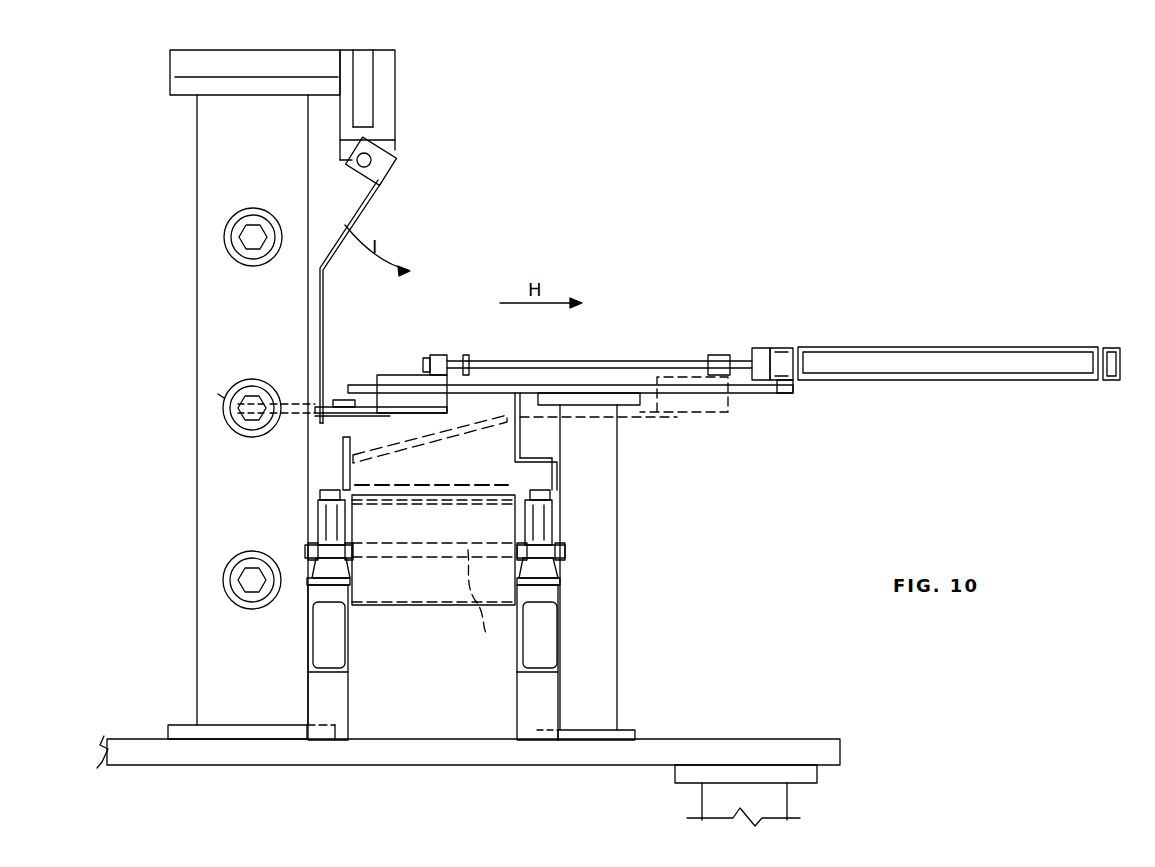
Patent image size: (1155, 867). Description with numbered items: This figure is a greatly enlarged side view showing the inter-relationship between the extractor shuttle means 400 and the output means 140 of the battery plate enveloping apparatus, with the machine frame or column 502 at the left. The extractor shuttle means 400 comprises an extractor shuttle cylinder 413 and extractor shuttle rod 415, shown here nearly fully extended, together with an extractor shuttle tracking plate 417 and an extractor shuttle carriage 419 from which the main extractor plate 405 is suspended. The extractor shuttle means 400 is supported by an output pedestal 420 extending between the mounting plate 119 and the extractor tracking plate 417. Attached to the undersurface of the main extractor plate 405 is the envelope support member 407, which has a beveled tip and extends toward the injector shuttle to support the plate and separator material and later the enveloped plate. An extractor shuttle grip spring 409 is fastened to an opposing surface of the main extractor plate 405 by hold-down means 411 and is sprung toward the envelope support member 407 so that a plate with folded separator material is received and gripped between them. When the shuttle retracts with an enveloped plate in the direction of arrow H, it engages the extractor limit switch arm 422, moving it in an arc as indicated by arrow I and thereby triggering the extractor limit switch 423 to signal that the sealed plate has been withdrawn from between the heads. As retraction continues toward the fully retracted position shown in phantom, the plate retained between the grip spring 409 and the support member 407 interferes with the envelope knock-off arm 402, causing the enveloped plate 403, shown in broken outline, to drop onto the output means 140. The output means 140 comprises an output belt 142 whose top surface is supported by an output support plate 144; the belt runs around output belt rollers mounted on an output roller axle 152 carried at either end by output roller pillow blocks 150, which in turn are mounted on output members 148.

The column 502 is at (218, 290).
The extractor limit switch 423 is at (387, 112).
The extractor limit switch arm 422 is at (317, 310).
The main extractor plate 405 is at (437, 415).
The envelope support member 407 is at (380, 418).
The hold-down means 411 is at (340, 400).
The extractor shuttle grip spring 409 is at (325, 402).
The extractor shuttle carriage 419 is at (400, 377).
The extractor shuttle tracking plate 417 is at (752, 393).
The extractor shuttle rod 415 is at (641, 360).
The extractor shuttle means 400 is at (936, 335).
The extractor shuttle cylinder 413 is at (1000, 330).
The envelope knock-off arm 402 is at (520, 440).
The enveloped plate 403 is at (440, 437).
The output pedestal 420 is at (596, 710).
The mounting plate 119 is at (490, 755).
The output means 140 is at (463, 612).
The output belt 142 is at (390, 590).
The output roller axle 152 is at (486, 633).
The output roller pillow block 150 is at (318, 540).
The output support plate 144 is at (550, 498).
The output member 148 is at (345, 672).